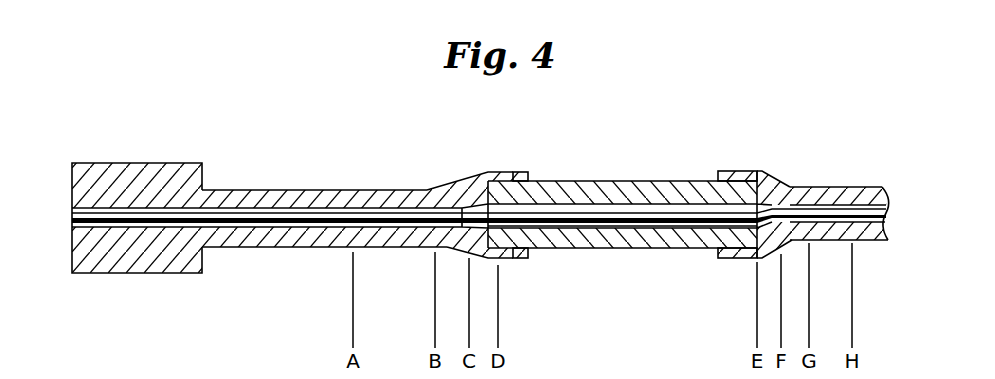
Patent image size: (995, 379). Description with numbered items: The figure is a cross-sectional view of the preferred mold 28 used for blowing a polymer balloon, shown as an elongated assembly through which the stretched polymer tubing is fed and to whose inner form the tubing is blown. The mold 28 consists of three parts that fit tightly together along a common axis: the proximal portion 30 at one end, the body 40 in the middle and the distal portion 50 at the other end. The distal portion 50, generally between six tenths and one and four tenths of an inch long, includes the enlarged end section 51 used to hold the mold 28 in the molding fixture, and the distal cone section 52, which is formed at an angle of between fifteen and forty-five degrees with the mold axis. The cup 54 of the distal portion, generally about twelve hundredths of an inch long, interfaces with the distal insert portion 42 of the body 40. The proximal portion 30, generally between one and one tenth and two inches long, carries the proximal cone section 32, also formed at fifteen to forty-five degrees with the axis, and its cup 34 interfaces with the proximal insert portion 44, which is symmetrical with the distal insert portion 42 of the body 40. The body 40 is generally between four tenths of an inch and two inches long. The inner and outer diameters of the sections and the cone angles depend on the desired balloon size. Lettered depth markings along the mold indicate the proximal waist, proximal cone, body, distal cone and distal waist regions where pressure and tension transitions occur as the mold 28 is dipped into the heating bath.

The mold 28 is at (370, 168).
The proximal portion 30 is at (835, 198).
The proximal cone section 32 is at (775, 188).
The cup of the proximal portion 34 is at (740, 177).
The body 40 is at (625, 200).
The distal insert portion 42 is at (523, 253).
The proximal insert portion 44 is at (727, 238).
The distal portion 50 is at (295, 200).
The enlarged end section 51 is at (163, 180).
The distal cone section 52 is at (467, 190).
The cup of the distal portion 54 is at (519, 172).